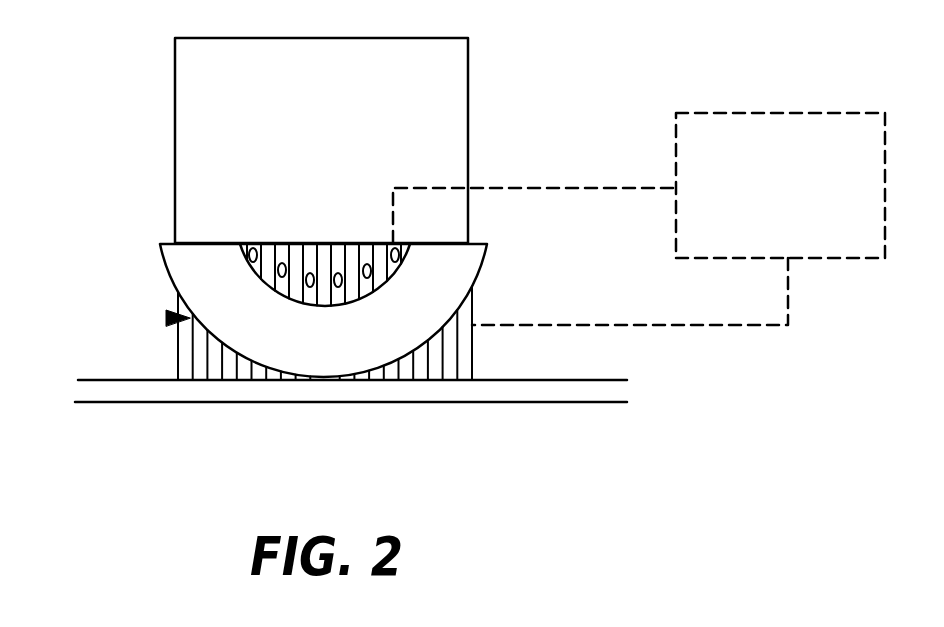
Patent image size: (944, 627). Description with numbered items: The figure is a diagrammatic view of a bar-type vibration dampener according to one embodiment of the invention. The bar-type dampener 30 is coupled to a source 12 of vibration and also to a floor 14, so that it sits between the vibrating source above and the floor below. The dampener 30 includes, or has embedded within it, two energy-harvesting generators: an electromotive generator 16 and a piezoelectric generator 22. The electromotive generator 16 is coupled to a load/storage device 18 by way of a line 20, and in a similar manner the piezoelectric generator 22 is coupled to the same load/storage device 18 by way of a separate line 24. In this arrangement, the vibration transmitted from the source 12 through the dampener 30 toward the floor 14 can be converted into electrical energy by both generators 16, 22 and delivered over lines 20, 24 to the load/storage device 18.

The source of vibration 12 is at (175, 122).
The floor 14 is at (172, 403).
The electromotive generator 16 is at (270, 256).
The load/storage device 18 is at (783, 113).
The line 20 is at (538, 187).
The piezoelectric generator 22 is at (178, 352).
The line 24 is at (660, 326).
The bar-type dampener 30 is at (168, 318).